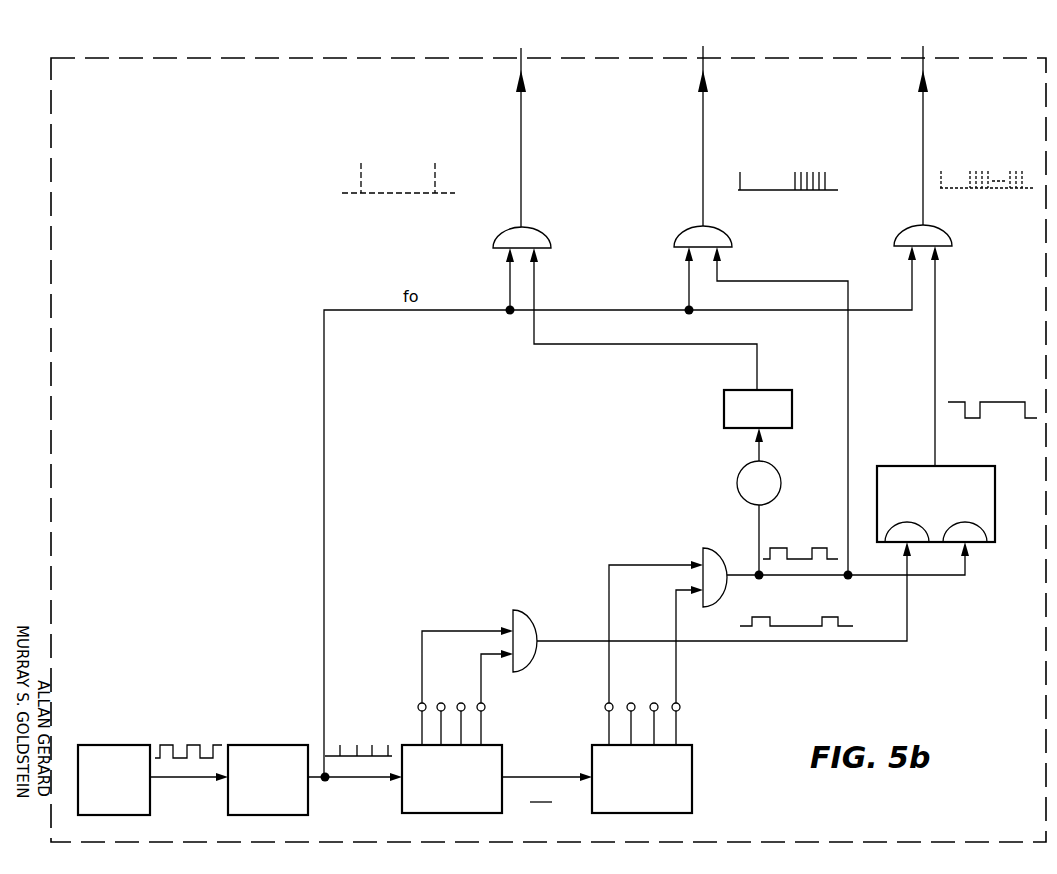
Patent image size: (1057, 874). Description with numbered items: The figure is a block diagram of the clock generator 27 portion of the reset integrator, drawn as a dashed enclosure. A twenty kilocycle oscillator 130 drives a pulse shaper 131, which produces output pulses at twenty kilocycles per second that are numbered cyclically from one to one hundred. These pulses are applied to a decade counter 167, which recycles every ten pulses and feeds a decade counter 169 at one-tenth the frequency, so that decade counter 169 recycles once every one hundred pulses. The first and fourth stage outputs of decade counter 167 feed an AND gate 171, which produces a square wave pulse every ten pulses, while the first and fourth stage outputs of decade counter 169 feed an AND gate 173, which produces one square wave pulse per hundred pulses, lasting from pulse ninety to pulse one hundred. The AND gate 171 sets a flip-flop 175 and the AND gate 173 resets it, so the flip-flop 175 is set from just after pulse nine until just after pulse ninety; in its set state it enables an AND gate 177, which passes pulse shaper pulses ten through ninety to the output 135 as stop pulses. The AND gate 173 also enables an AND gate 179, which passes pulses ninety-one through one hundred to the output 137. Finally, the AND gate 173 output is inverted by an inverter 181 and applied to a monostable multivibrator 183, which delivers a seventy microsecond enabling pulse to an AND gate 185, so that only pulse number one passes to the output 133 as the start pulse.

The timing and control unit 27 is at (51, 128).
The 20 kilocycle oscillator 130 is at (132, 745).
The pulse shaper 131 is at (276, 745).
The output 133 is at (524, 152).
The output 135 is at (926, 124).
The output 137 is at (706, 142).
The decade counter 167 is at (505, 751).
The decade counter 169 is at (695, 751).
The AND gate 171 is at (531, 616).
The AND gate 173 is at (709, 549).
The flip-flop 175 is at (972, 464).
The AND gate 177 is at (940, 238).
The AND gate 179 is at (722, 240).
The inverter 181 is at (739, 477).
The monostable multivibrator 183 is at (740, 392).
The AND gate 185 is at (538, 241).